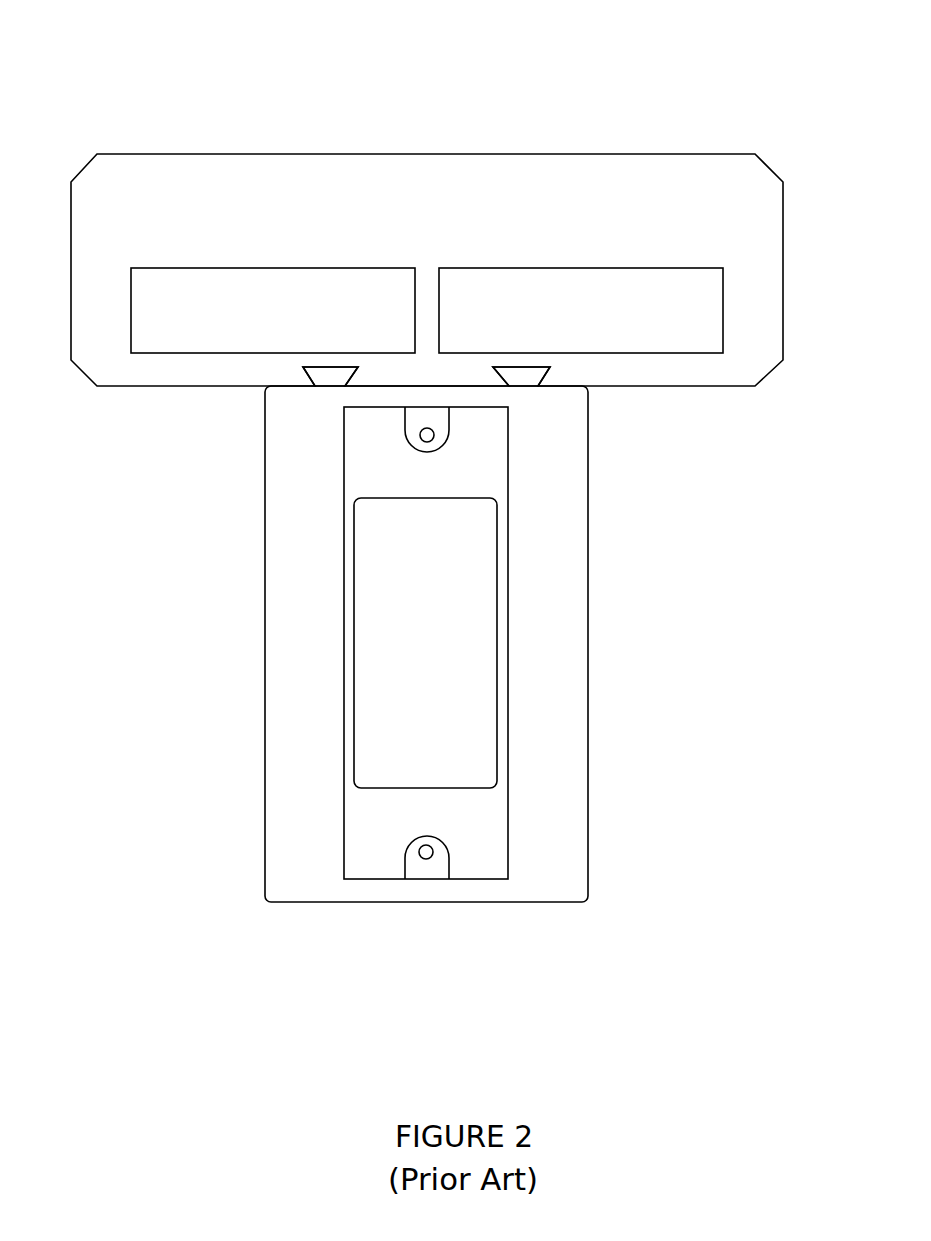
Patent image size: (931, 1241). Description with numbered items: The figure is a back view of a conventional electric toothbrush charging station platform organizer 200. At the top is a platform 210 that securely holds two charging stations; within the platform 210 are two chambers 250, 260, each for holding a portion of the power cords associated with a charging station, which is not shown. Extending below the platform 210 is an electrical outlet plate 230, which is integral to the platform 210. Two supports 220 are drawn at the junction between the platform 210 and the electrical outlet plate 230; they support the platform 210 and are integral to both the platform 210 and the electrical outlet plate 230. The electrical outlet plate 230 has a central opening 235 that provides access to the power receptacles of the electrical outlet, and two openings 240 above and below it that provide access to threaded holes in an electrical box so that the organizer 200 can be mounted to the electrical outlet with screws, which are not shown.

The conventional electric toothbrush charging station platform organizer 200 is at (86, 42).
The platform 210 is at (246, 232).
The supports 220 is at (335, 382).
The electrical outlet plate 230 is at (533, 692).
The opening 235 is at (455, 579).
The openings 240 is at (435, 430).
The chamber 250 is at (290, 334).
The chamber 260 is at (608, 334).